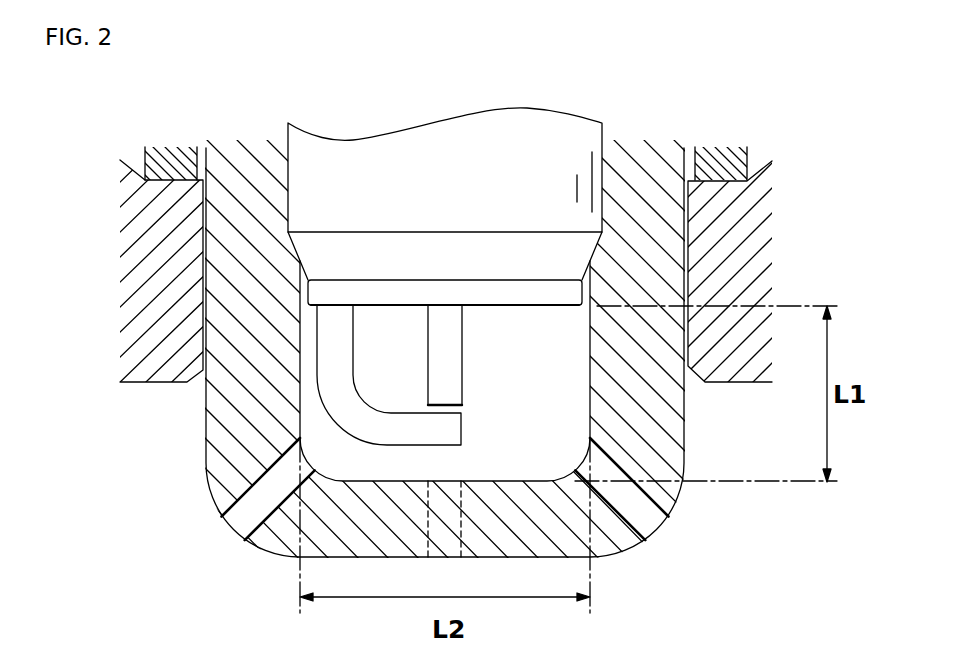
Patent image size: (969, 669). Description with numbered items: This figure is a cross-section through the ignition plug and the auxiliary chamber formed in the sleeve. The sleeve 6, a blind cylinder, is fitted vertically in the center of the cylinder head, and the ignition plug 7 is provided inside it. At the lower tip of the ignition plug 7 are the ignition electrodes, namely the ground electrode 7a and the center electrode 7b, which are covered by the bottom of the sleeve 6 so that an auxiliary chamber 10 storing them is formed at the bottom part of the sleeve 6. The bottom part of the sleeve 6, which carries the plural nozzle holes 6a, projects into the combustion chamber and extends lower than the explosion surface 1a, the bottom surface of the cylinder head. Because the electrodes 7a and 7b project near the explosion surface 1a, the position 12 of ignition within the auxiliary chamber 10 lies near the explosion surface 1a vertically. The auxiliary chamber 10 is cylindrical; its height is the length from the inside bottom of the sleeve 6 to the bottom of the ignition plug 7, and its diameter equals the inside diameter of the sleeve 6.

The explosion surface 1a is at (150, 383).
The sleeve 6 is at (753, 167).
The nozzle holes 6a is at (227, 530).
The ignition plug 7 is at (602, 133).
The ground electrode 7a is at (462, 432).
The center electrode 7b is at (427, 357).
The auxiliary chamber 10 is at (566, 358).
The position of ignition 12 is at (476, 412).